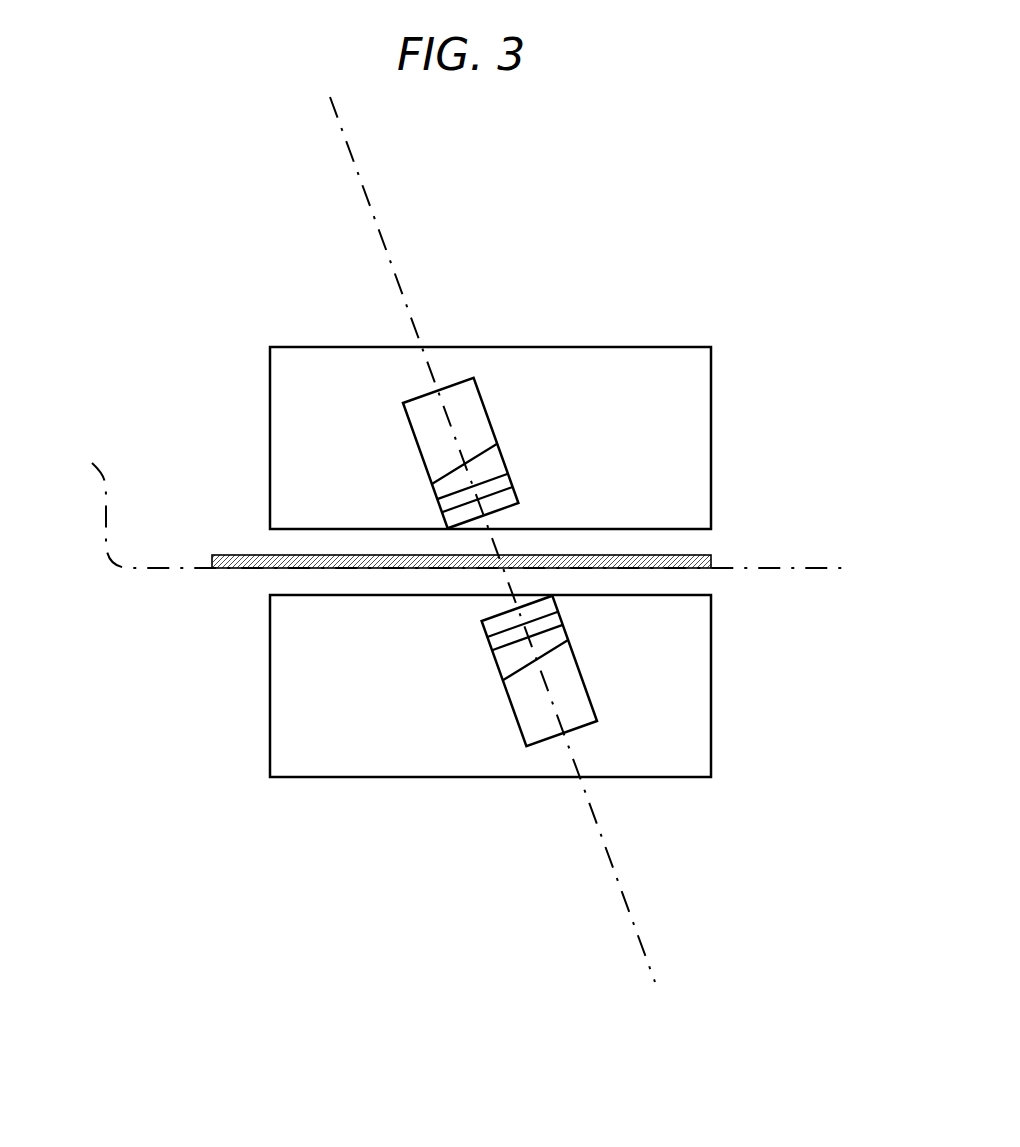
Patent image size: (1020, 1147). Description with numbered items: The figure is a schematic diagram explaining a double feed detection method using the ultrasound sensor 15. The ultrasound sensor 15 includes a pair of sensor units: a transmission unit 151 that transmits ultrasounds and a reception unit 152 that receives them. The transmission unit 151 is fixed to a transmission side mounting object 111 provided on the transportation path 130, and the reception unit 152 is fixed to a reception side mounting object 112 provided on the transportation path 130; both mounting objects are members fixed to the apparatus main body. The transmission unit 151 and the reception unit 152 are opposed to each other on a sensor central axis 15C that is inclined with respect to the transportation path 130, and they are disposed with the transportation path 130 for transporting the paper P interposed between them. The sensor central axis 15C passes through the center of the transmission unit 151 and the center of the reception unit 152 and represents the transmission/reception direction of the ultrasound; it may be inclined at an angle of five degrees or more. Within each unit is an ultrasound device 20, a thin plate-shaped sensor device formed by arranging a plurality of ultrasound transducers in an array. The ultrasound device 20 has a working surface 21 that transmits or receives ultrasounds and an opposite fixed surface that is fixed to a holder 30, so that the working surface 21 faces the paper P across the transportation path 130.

The ultrasound sensor 15 is at (424, 823).
The sensor central axis 15C is at (610, 869).
The transmission side mounting object 111 is at (268, 403).
The reception side mounting object 112 is at (268, 690).
The transmission unit 151 is at (418, 447).
The reception unit 152 is at (504, 688).
The ultrasound device 20 is at (486, 562).
The working surface 21 is at (445, 522).
The holder 30 is at (490, 468).
The transportation path 130 is at (458, 500).
The paper P is at (222, 570).